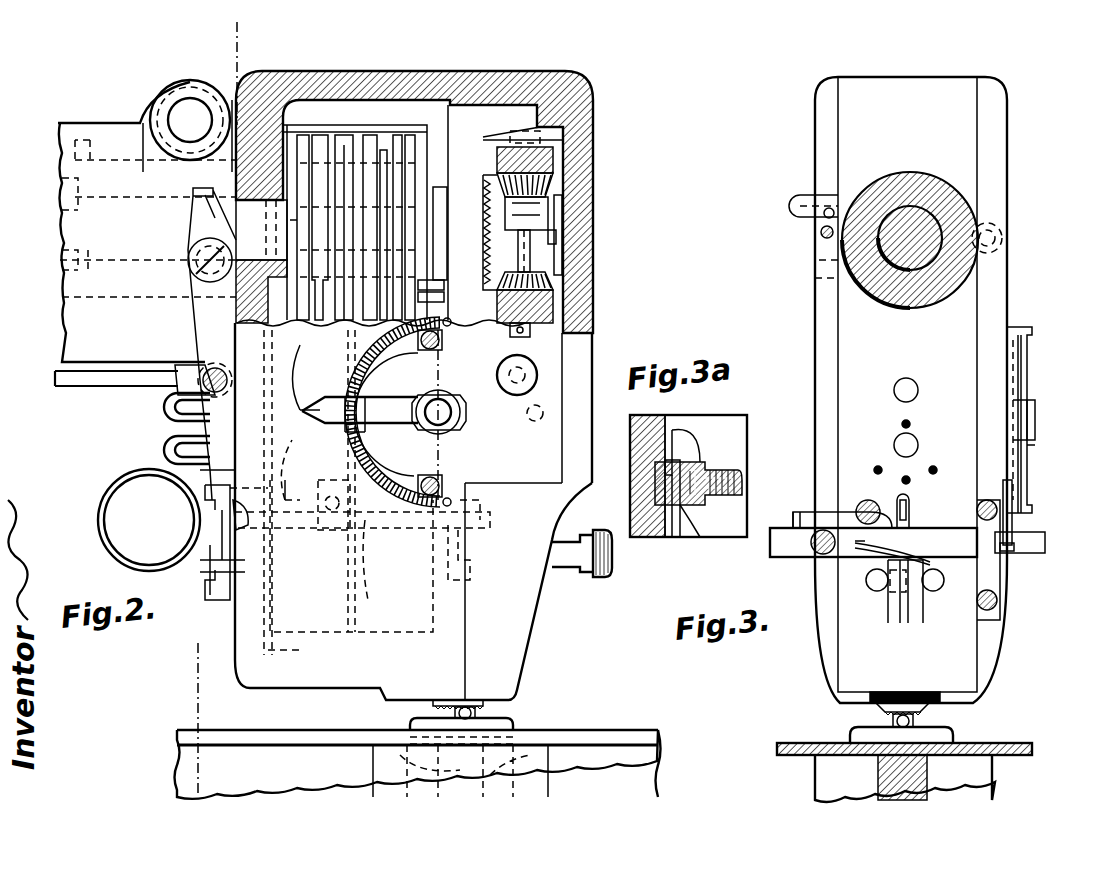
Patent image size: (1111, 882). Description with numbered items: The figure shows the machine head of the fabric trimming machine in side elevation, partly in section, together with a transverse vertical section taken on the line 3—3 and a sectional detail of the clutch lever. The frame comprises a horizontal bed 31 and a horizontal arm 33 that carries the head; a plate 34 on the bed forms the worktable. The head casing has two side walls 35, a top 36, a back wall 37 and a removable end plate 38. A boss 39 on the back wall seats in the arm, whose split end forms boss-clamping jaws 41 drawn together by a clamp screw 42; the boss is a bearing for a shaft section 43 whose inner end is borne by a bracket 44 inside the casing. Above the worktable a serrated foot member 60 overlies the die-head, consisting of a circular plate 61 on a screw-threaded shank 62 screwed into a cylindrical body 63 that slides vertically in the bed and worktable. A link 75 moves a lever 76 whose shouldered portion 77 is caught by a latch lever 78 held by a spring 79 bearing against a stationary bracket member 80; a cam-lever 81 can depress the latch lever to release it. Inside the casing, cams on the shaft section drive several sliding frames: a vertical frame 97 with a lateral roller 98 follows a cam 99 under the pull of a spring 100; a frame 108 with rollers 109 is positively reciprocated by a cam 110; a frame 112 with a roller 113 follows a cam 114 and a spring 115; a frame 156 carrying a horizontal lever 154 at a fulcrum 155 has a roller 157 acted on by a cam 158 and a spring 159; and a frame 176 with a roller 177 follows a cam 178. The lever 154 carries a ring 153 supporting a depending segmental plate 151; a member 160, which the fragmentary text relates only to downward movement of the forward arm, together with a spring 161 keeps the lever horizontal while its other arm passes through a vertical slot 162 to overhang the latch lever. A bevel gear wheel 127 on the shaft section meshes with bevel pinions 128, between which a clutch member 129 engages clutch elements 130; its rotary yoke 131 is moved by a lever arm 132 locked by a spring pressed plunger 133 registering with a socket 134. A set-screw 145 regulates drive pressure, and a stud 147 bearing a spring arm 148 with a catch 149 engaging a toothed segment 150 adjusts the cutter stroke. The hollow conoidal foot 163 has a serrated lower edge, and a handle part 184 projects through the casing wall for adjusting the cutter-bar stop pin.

In FIG. 2, the section line 3 is at (277, 45).
In FIG. 2, the horizontal bed 31 is at (640, 770).
In FIG. 3, the horizontal bed 31 is at (815, 782).
In FIG. 2, the horizontal arm 33 is at (78, 130).
In FIG. 2, the plate 34 is at (630, 740).
In FIG. 3, the plate 34 is at (777, 743).
In FIG. 2, the side walls 35 is at (275, 660).
In FIG. 3, the side walls 35 is at (815, 314).
In FIG. 2, the top 36 is at (540, 74).
In FIG. 2, the back wall 37 is at (208, 177).
In FIG. 3, the back wall 37 is at (855, 138).
In FIG. 2, the removable end plate 38 is at (590, 110).
In FIG. 3, the boss 39 is at (912, 173).
In FIG. 2, the boss-clamping jaws 41 is at (160, 90).
In FIG. 2, the clamp screw 42 is at (188, 95).
In FIG. 2, the shaft section 43 is at (268, 230).
In FIG. 3, the shaft section 43 is at (935, 222).
In FIG. 2, the bracket 44 is at (505, 212).
In FIG. 2, the serrated foot member 60 is at (480, 710).
In FIG. 3, the serrated foot member 60 is at (915, 722).
In FIG. 2, the circular plate 61 is at (500, 728).
In FIG. 3, the circular plate 61 is at (862, 730).
In FIG. 2, the screw-threaded shank 62 is at (415, 750).
In FIG. 2, the cylindrical body 63 is at (530, 760).
In FIG. 2, the link 75 is at (55, 375).
In FIG. 2, the lever 76 is at (210, 338).
In FIG. 3, the lever 76 is at (1012, 495).
In FIG. 2, the shouldered portion 77 is at (245, 530).
In FIG. 3, the shouldered portion 77 is at (1012, 528).
In FIG. 2, the latch lever 78 is at (215, 530).
In FIG. 3, the latch lever 78 is at (1032, 553).
In FIG. 3, the spring 79 is at (900, 548).
In FIG. 2, the stationary bracket member 80 is at (205, 588).
In FIG. 3, the stationary bracket member 80 is at (888, 595).
In FIG. 3, the cam-lever 81 is at (885, 510).
In FIG. 2, the vertical frame 97 is at (262, 416).
In FIG. 2, the lateral roller 98 is at (348, 150).
In FIG. 2, the cam 99 is at (340, 140).
In FIG. 2, the spring 100 is at (100, 518).
In FIG. 2, the vertical frame 108 is at (384, 140).
In FIG. 2, the lateral rollers 109 is at (400, 150).
In FIG. 2, the cam 110 is at (410, 140).
In FIG. 2, the vertical frame 112 is at (425, 298).
In FIG. 2, the lateral roller 113 is at (425, 285).
In FIG. 2, the cam 114 is at (440, 185).
In FIG. 2, the spring 115 is at (160, 450).
In FIG. 2, the bevel gear wheel 127 is at (532, 262).
In FIG. 2, the bevel pinions 128 is at (550, 165).
In FIG. 2, the clutch member 129 is at (555, 205).
In FIG. 2, the clutch elements 130 is at (545, 185).
In FIG. 2, the rotary yoke 131 is at (560, 222).
In FIG. 2, the lever arm 132 is at (555, 237).
In FIG. 3A, the lever arm 132 is at (676, 462).
In FIG. 3, the lever arm 132 is at (825, 234).
In FIG. 3A, the spring pressed plunger 133 is at (712, 520).
In FIG. 3, the spring pressed plunger 133 is at (823, 240).
In FIG. 3A, the socket 134 is at (705, 440).
In FIG. 3, the socket 134 is at (830, 212).
In FIG. 2, the set-screw 145 is at (530, 372).
In FIG. 2, the stud 147 is at (450, 422).
In FIG. 2, the spring arm 148 is at (365, 418).
In FIG. 3, the spring arm 148 is at (1013, 413).
In FIG. 2, the catch 149 is at (350, 436).
In FIG. 3, the catch 149 is at (1027, 445).
In FIG. 2, the toothed segment 150 is at (368, 358).
In FIG. 3, the toothed segment 150 is at (1018, 347).
In FIG. 2, the depending segmental plate 151 is at (470, 570).
In FIG. 2, the ring 153 is at (470, 512).
In FIG. 2, the horizontal lever 154 is at (490, 520).
In FIG. 3, the horizontal lever 154 is at (912, 505).
In FIG. 2, the fulcrum 155 is at (330, 520).
In FIG. 2, the vertical frame 156 is at (350, 322).
In FIG. 2, the lateral roller 157 is at (360, 340).
In FIG. 2, the cam 158 is at (355, 211).
In FIG. 2, the spring 159 is at (160, 407).
In FIG. 2, the lever 160 is at (365, 590).
In FIG. 2, the spring 161 is at (299, 460).
In FIG. 3, the vertical slot 162 is at (912, 528).
In FIG. 2, the hollow conoidal foot 163 is at (470, 700).
In FIG. 3, the hollow conoidal foot 163 is at (920, 702).
In FIG. 2, the vertically-movable frame 176 is at (300, 360).
In FIG. 2, the lateral roller 177 is at (316, 140).
In FIG. 2, the cam 178 is at (310, 200).
In FIG. 2, the handle part 184 is at (595, 575).